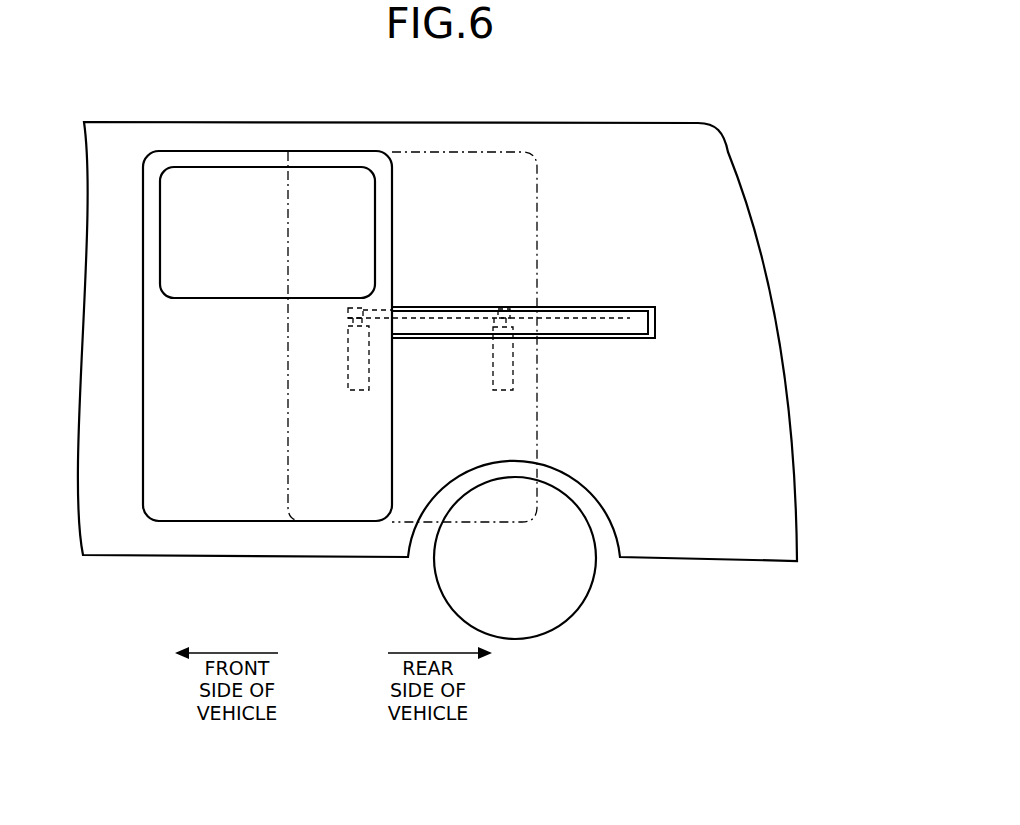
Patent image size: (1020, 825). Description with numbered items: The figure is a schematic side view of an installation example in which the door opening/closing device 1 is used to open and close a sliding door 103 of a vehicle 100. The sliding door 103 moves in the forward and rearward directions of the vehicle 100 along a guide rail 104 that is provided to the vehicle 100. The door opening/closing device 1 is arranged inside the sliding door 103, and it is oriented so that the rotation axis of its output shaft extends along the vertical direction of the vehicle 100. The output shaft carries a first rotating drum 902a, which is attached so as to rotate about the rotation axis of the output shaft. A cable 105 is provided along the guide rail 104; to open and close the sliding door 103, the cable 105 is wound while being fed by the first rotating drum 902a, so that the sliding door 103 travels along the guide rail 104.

The vehicle 100 is at (717, 133).
The sliding door 103 is at (225, 151).
The guide rail 104 is at (606, 307).
The cable 105 is at (613, 320).
The first rotating drum 902a is at (347, 320).
The door opening/closing device 1 is at (348, 375).